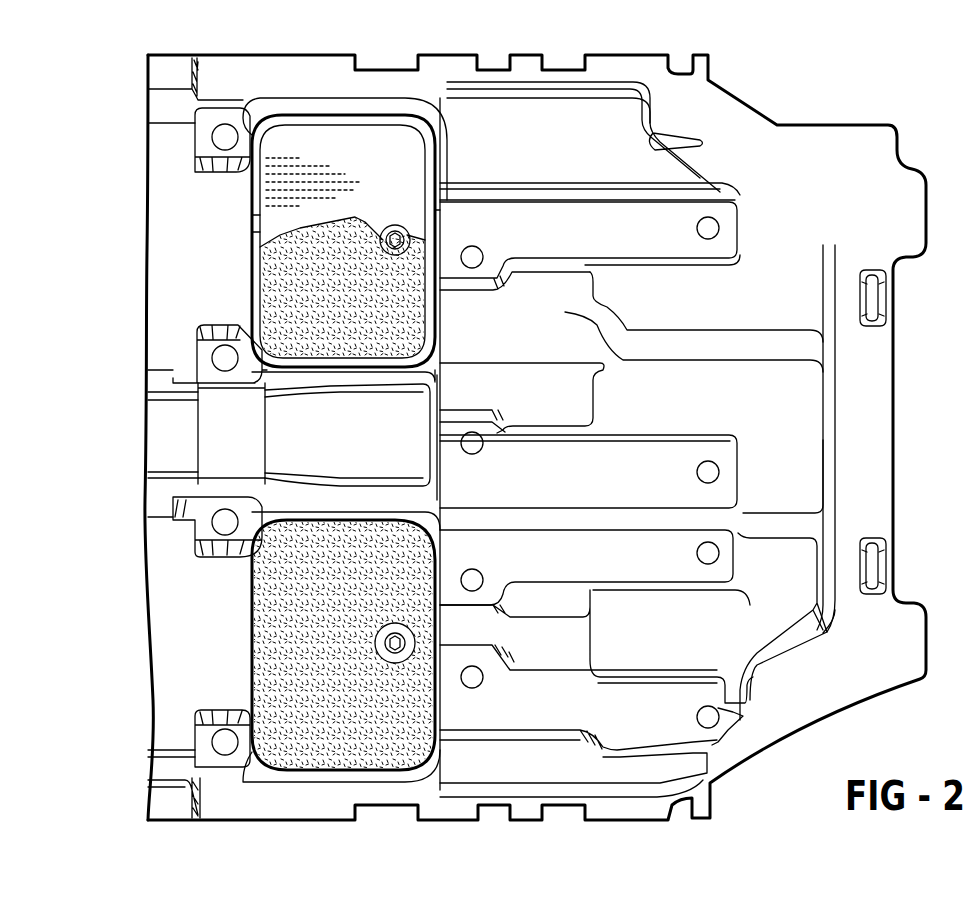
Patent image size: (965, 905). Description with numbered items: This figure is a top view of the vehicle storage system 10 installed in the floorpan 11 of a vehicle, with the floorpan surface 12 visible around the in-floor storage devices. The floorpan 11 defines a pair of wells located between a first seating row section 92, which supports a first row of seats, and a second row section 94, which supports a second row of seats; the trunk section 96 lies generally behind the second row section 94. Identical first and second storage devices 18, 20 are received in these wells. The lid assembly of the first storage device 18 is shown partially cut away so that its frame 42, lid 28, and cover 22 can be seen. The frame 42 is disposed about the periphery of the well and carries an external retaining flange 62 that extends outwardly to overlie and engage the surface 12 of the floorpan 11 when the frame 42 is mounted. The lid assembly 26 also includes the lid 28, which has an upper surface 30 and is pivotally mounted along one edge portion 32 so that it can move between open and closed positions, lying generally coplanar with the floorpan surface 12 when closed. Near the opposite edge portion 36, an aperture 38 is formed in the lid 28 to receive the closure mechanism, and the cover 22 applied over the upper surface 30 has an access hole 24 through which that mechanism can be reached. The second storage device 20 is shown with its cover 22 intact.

The vehicle storage system 10 is at (120, 136).
The floorpan 11 is at (148, 56).
The surface of the floorpan 12 is at (234, 231).
The first storage device 18 is at (272, 365).
The second storage device 20 is at (272, 766).
The cover 22 is at (346, 250).
The access hole 24 is at (386, 256).
The lid assembly 26 is at (259, 127).
The lid 28 is at (251, 233).
The upper surface 30 is at (374, 164).
The edge portion 32 is at (251, 215).
The opposite edge portion 36 is at (432, 213).
The aperture 38 is at (400, 226).
The frame 42 is at (339, 203).
The external retaining flange 62 is at (360, 113).
The first seating row section 92 is at (178, 54).
The second row section 94 is at (455, 53).
The trunk section 96 is at (878, 124).